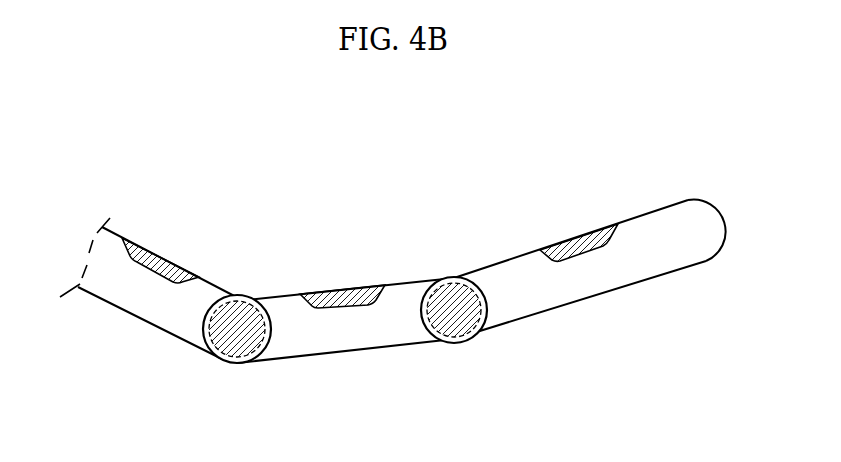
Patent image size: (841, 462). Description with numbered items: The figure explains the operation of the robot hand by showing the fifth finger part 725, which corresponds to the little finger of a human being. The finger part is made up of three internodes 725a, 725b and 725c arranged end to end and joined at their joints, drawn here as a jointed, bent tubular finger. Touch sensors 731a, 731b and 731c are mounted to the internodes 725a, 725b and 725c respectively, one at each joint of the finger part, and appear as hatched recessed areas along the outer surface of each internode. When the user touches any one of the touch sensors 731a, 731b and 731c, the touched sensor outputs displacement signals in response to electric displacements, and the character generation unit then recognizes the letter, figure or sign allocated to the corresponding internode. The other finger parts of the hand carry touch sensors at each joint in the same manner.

The fifth finger part 725 is at (393, 276).
The internode 725a is at (607, 278).
The internode 725b is at (355, 342).
The internode 725c is at (155, 315).
The touch sensor 731a is at (572, 242).
The touch sensor 731b is at (345, 293).
The touch sensor 731c is at (163, 262).